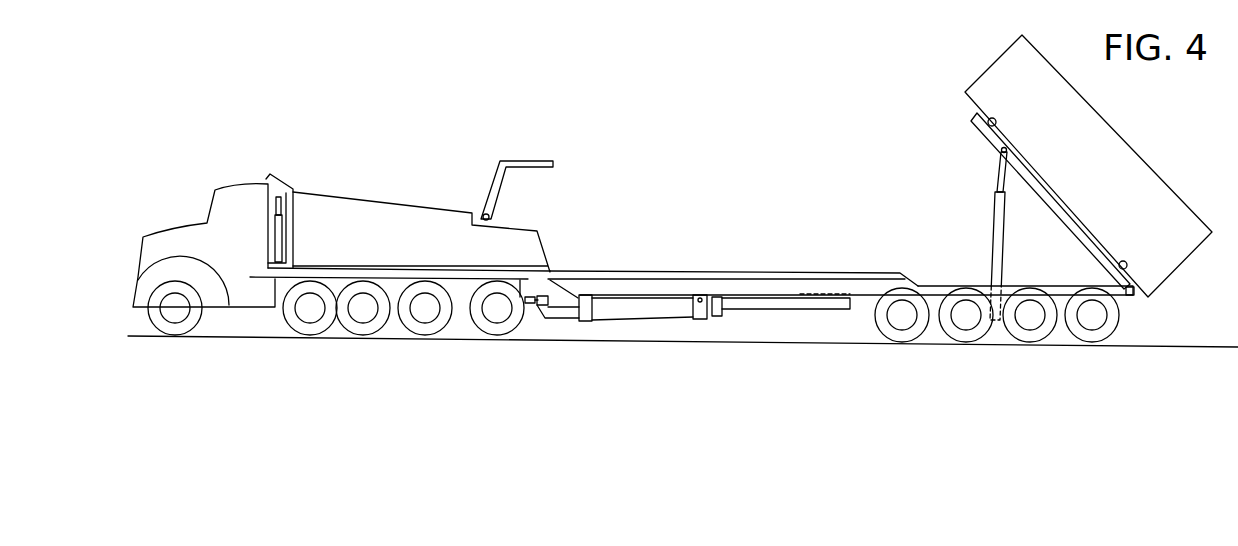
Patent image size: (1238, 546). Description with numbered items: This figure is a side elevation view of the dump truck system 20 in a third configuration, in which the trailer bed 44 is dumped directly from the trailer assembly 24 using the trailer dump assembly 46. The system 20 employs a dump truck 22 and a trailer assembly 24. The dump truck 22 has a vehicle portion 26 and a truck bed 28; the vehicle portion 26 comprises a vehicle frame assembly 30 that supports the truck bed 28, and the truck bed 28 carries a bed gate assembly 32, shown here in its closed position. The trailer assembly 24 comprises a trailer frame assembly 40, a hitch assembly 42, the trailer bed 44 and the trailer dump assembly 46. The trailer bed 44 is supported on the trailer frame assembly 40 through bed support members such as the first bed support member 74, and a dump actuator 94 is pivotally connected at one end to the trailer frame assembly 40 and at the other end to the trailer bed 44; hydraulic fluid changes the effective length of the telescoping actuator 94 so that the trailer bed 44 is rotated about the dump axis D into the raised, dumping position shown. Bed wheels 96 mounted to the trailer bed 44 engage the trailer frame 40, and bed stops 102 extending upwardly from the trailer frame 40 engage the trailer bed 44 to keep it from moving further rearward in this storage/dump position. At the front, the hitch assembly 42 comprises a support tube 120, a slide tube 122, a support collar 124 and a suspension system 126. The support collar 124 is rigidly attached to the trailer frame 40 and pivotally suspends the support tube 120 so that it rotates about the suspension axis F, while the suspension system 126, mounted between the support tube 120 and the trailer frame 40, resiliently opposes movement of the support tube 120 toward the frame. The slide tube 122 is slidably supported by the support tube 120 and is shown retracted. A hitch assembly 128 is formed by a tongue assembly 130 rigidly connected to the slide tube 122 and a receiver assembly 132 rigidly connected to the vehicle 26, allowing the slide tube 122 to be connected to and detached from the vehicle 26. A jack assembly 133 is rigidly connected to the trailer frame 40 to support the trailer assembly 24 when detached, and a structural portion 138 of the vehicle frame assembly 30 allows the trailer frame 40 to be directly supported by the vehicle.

The dump truck system 20 is at (1073, 184).
The dump truck 22 is at (586, 194).
The trailer assembly 24 is at (840, 241).
The vehicle portion 26 is at (191, 201).
The truck bed 28 is at (331, 196).
The vehicle frame assembly 30 is at (462, 299).
The bed gate assembly 32 is at (546, 152).
The trailer frame assembly 40 is at (797, 261).
The hitch assembly 42 is at (622, 330).
The trailer bed 44 is at (987, 54).
The trailer dump assembly 46 is at (951, 234).
The first bed support member 74 is at (1072, 241).
The dump actuator 94 is at (991, 248).
The bed wheels 96 is at (995, 121).
The bed stops 102 is at (1157, 302).
The support tube 120 is at (675, 323).
The slide tube 122 is at (790, 305).
The support collar 124 is at (704, 322).
The suspension system 126 is at (593, 330).
The hitch assembly 128 is at (540, 326).
The tongue assembly 130 is at (570, 321).
The receiver assembly 132 is at (527, 325).
The jack assembly 133 is at (735, 322).
The structural portion 138 is at (527, 277).
The suspension axis F is at (699, 295).
The dump axis D is at (1129, 296).